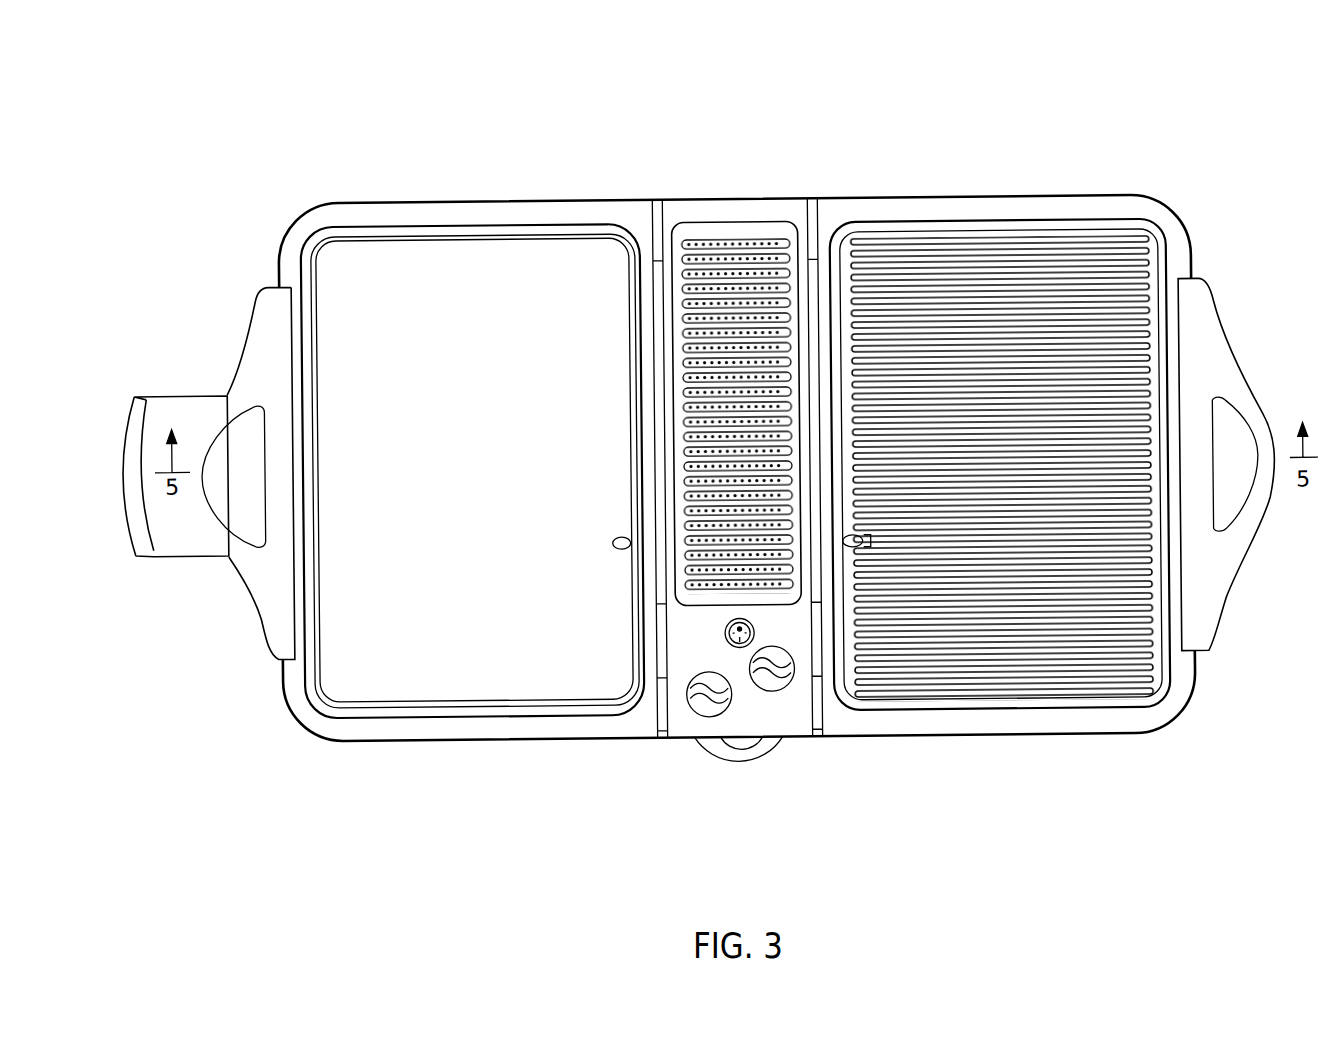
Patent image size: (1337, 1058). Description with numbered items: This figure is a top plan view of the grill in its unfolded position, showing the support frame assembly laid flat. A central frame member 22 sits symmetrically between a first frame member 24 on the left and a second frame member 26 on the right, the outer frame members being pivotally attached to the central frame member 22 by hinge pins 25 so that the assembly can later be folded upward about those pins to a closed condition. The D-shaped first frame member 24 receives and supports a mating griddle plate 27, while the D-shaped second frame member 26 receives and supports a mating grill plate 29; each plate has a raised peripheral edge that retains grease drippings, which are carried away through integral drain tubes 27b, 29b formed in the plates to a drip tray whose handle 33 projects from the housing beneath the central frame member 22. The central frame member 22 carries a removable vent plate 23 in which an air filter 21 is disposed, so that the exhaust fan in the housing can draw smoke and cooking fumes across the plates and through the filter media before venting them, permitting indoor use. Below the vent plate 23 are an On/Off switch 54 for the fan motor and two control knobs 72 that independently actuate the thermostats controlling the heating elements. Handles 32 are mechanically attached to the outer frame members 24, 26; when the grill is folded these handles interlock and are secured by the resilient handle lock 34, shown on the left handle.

The air filter 21 is at (707, 242).
The central frame member 22 is at (745, 722).
The removable vent plate 23 is at (777, 232).
The first frame member 24 is at (574, 731).
The hinge pins 25 is at (813, 199).
The second frame member 26 is at (927, 725).
The griddle plate 27 is at (487, 682).
The drain tube 27b is at (612, 539).
The grill plate 29 is at (1017, 689).
The drain tube 29b is at (865, 546).
The handles 32 is at (1202, 632).
The handle 33 is at (738, 762).
The resilient handle lock 34 is at (163, 409).
The On/Off switch 54 is at (730, 641).
The control knobs 72 is at (765, 685).